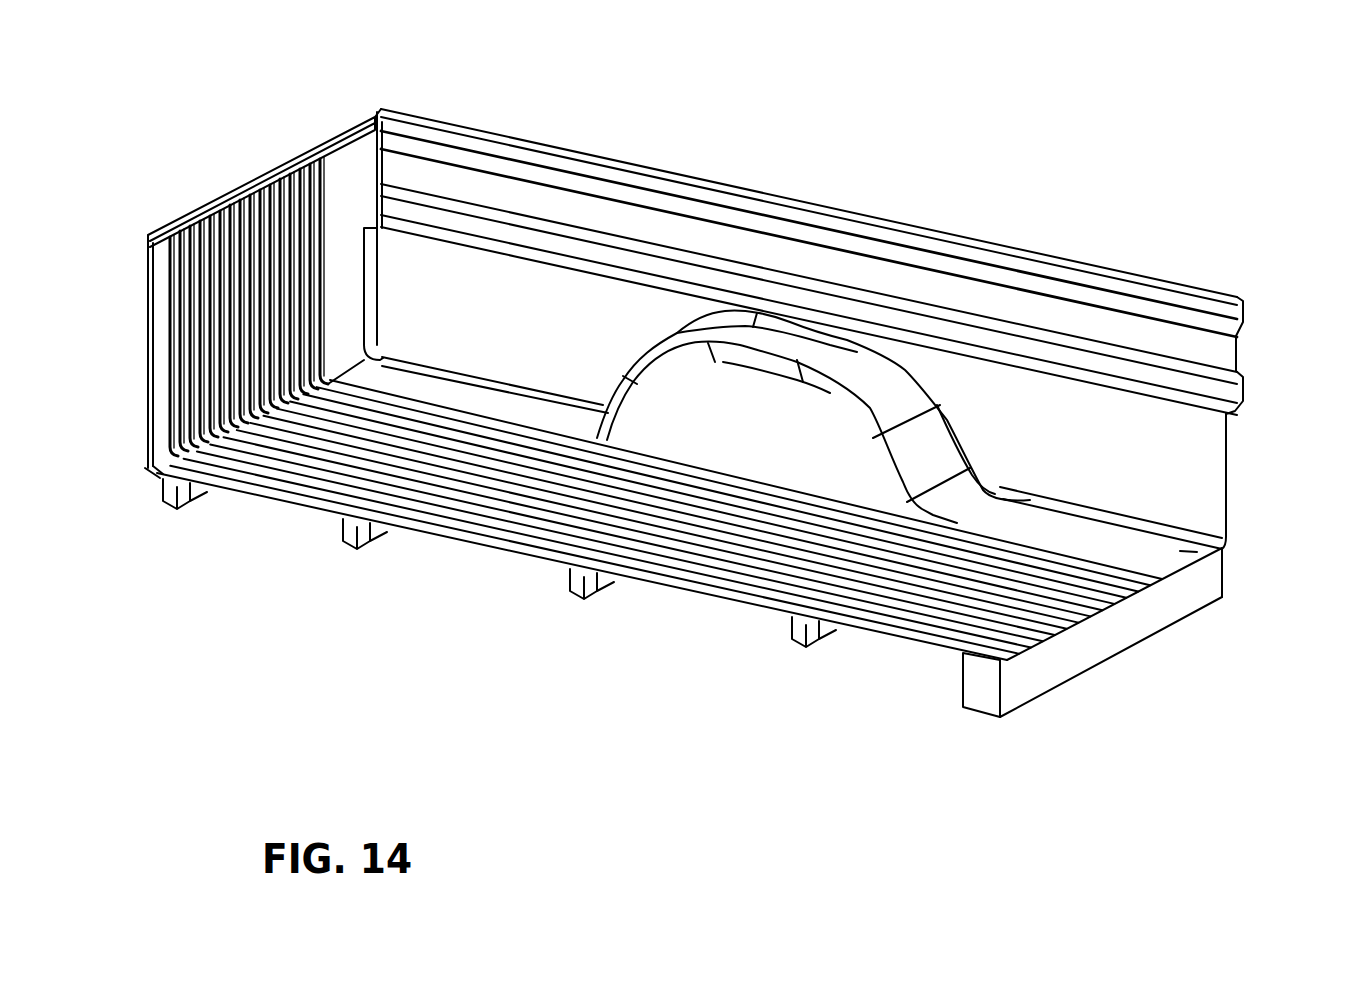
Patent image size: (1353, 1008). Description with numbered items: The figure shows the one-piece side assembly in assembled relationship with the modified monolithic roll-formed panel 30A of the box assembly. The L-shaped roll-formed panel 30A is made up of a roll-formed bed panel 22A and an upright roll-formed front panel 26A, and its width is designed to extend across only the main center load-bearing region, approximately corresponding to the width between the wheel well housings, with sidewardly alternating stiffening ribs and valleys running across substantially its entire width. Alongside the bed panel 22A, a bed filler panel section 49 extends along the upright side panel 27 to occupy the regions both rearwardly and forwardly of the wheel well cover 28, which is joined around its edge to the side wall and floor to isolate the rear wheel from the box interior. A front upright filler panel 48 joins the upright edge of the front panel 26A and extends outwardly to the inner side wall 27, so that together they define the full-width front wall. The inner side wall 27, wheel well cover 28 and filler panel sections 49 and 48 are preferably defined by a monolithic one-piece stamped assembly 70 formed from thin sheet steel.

The roll-formed bed panel 22A is at (745, 587).
The roll-formed front panel 26A is at (148, 350).
The upright side panel 27 is at (1227, 470).
The wheel well cover 28 is at (792, 343).
The roll-formed panel 30A is at (283, 503).
The front upright filler panel 48 is at (339, 177).
The bed filler panel section 49 is at (481, 395).
The monolithic one-piece stamped assembly 70 is at (1157, 268).